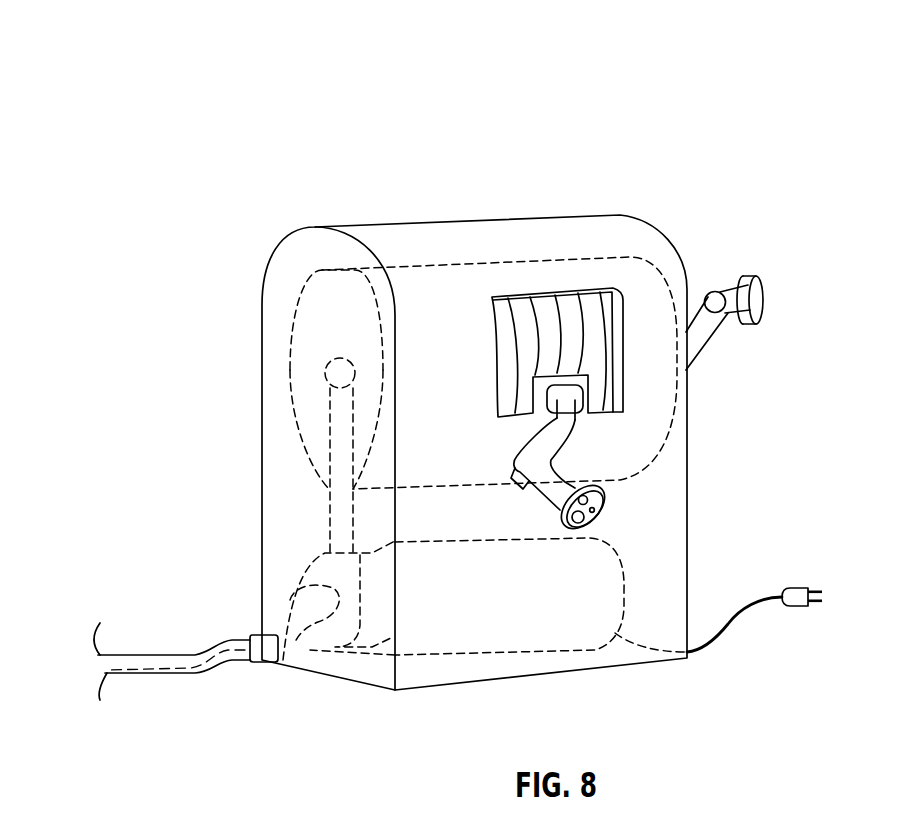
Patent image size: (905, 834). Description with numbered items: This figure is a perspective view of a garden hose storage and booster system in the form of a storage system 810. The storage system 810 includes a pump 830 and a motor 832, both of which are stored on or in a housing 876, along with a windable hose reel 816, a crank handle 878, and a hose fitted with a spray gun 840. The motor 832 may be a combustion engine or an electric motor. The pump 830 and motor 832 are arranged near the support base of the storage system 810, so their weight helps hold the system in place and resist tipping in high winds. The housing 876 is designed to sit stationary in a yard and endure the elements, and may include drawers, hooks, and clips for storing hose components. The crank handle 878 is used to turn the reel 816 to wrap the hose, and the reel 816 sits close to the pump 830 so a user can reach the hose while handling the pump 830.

The storage system 810 is at (413, 92).
The windable hose reel 816 is at (588, 325).
The pump 830 is at (328, 627).
The motor 832 is at (548, 618).
The spray gun 840 is at (553, 485).
The housing 876 is at (322, 308).
The crank handle 878 is at (740, 278).